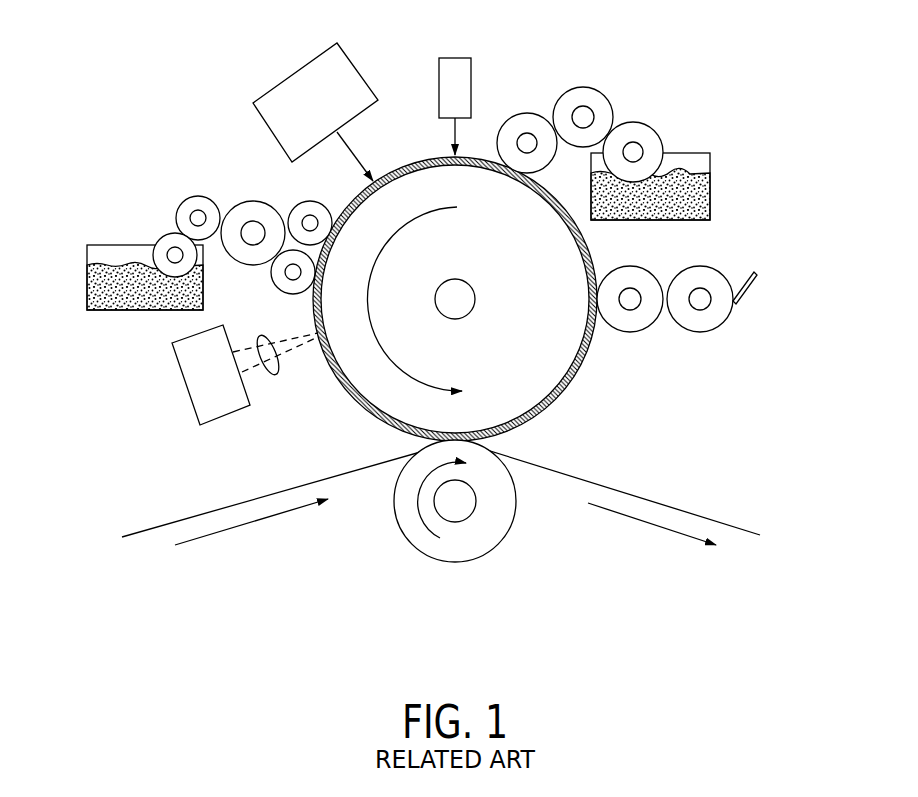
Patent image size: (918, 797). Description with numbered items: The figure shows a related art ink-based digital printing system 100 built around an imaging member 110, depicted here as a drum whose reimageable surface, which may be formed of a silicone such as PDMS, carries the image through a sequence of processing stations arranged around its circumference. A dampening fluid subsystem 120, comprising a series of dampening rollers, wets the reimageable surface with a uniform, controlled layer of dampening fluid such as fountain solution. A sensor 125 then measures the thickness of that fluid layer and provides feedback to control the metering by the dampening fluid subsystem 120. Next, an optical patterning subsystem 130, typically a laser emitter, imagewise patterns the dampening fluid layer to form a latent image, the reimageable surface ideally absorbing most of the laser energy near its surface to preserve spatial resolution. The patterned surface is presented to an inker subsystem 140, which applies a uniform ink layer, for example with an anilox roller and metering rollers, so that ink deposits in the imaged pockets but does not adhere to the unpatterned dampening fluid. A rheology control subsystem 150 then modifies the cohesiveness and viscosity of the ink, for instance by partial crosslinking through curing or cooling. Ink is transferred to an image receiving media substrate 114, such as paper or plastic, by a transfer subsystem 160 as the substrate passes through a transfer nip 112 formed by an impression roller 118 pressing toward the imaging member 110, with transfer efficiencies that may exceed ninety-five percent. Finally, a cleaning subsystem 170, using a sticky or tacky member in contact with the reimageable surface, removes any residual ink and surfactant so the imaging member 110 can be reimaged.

The ink-based digital printing system 100 is at (163, 86).
The imaging member 110 is at (582, 362).
The transfer nip 112 is at (458, 438).
The image receiving media substrate 114 is at (225, 505).
The impression roller 118 is at (510, 528).
The dampening fluid subsystem 120 is at (615, 124).
The sensor 125 is at (457, 57).
The optical patterning subsystem 130 is at (359, 72).
The inker subsystem 140 is at (177, 252).
The rheology control subsystem 150 is at (219, 377).
The transfer subsystem 160 is at (455, 590).
The cleaning subsystem 170 is at (706, 296).